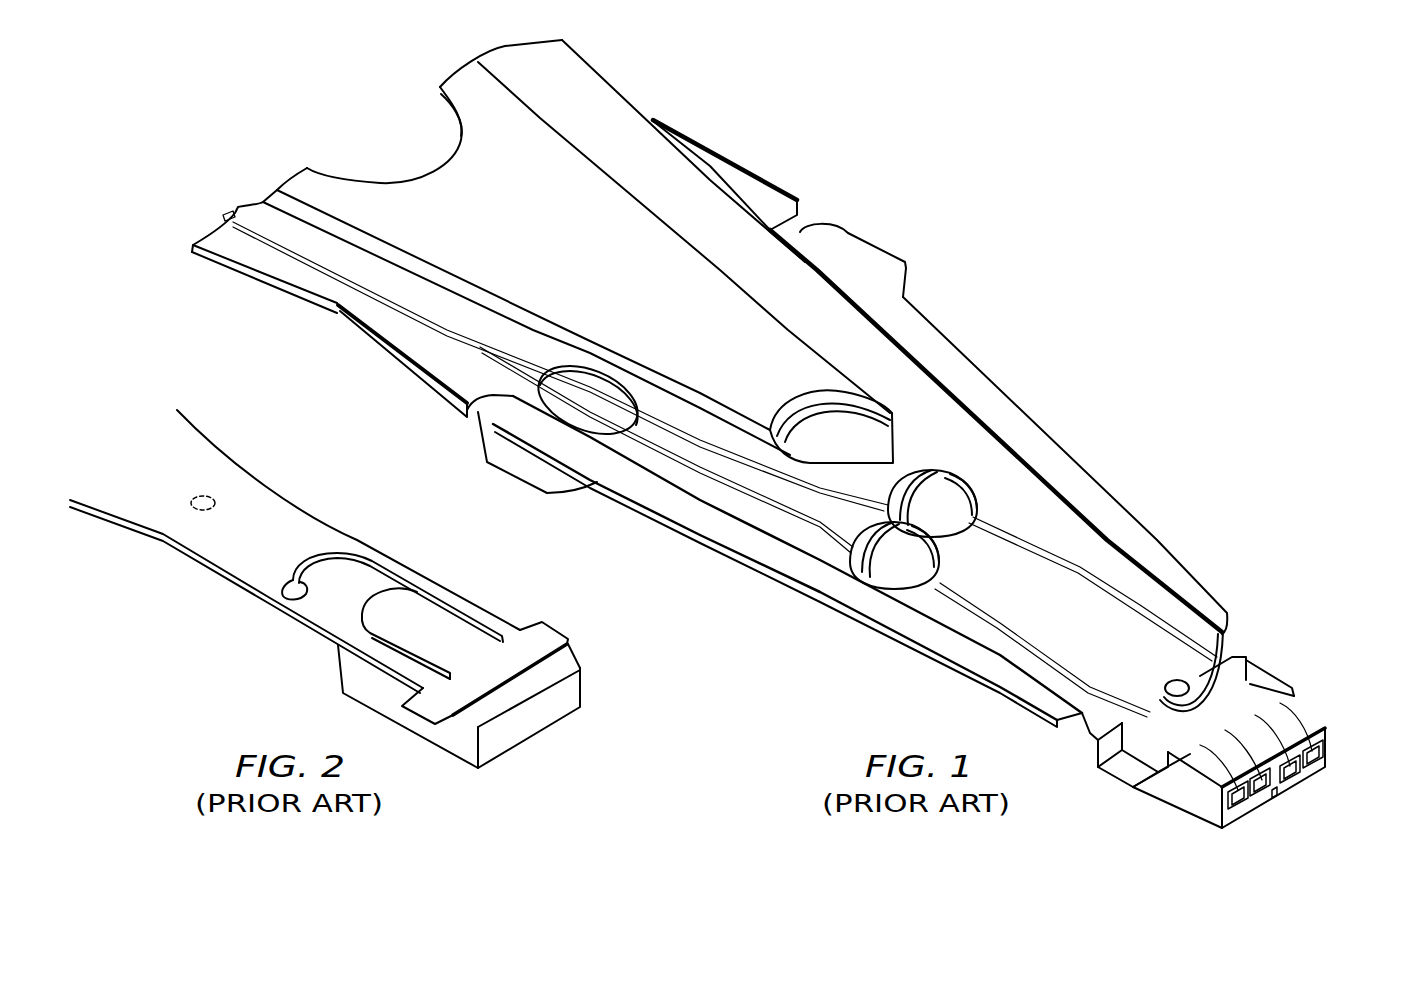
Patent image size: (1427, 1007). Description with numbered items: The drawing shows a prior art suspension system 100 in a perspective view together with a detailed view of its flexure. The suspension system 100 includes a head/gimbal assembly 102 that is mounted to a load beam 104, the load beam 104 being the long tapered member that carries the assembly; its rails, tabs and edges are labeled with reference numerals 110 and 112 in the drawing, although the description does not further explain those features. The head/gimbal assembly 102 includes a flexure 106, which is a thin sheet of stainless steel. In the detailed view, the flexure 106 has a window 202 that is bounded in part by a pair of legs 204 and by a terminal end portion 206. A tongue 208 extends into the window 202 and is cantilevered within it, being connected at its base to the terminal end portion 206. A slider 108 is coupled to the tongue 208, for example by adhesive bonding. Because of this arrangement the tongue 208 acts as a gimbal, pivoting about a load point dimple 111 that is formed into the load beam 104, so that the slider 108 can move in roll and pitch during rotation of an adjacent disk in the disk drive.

In FIG. 1, the prior art suspension system 100 is at (993, 351).
In FIG. 1, the head/gimbal assembly 102 is at (1302, 659).
In FIG. 2, the head/gimbal assembly 102 is at (519, 593).
In FIG. 1, the load beam 104 is at (458, 165).
In FIG. 1, the flexure 106 is at (1292, 688).
In FIG. 2, the flexure 106 is at (143, 515).
In FIG. 1, the slider 108 is at (1250, 815).
In FIG. 2, the slider 108 is at (583, 684).
In FIG. 1, the rail tab 110 is at (887, 258).
In FIG. 1, the load point dimple 111 is at (1195, 680).
In FIG. 1, the rail edge 112 is at (1168, 573).
In FIG. 2, the window 202 is at (290, 592).
In FIG. 2, the legs 204 is at (455, 602).
In FIG. 2, the terminal end portion 206 is at (498, 672).
In FIG. 2, the tongue 208 is at (395, 607).